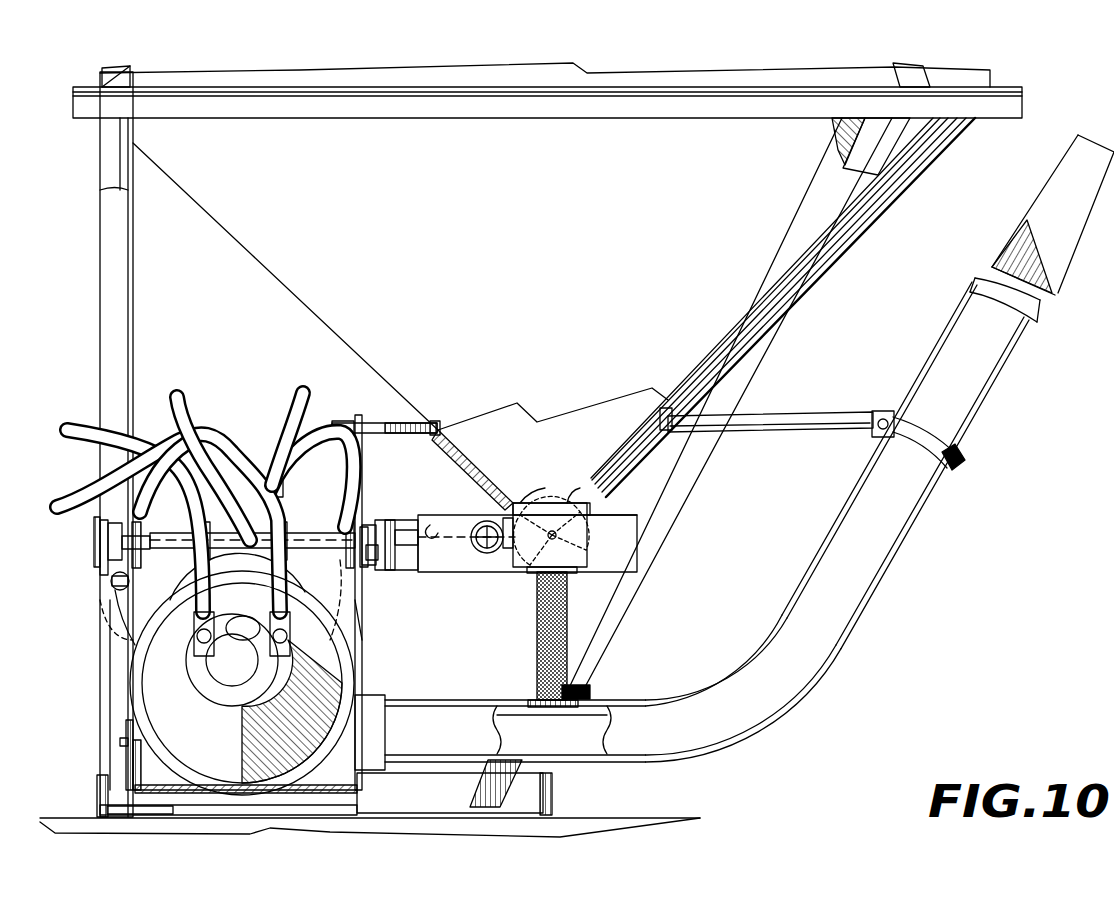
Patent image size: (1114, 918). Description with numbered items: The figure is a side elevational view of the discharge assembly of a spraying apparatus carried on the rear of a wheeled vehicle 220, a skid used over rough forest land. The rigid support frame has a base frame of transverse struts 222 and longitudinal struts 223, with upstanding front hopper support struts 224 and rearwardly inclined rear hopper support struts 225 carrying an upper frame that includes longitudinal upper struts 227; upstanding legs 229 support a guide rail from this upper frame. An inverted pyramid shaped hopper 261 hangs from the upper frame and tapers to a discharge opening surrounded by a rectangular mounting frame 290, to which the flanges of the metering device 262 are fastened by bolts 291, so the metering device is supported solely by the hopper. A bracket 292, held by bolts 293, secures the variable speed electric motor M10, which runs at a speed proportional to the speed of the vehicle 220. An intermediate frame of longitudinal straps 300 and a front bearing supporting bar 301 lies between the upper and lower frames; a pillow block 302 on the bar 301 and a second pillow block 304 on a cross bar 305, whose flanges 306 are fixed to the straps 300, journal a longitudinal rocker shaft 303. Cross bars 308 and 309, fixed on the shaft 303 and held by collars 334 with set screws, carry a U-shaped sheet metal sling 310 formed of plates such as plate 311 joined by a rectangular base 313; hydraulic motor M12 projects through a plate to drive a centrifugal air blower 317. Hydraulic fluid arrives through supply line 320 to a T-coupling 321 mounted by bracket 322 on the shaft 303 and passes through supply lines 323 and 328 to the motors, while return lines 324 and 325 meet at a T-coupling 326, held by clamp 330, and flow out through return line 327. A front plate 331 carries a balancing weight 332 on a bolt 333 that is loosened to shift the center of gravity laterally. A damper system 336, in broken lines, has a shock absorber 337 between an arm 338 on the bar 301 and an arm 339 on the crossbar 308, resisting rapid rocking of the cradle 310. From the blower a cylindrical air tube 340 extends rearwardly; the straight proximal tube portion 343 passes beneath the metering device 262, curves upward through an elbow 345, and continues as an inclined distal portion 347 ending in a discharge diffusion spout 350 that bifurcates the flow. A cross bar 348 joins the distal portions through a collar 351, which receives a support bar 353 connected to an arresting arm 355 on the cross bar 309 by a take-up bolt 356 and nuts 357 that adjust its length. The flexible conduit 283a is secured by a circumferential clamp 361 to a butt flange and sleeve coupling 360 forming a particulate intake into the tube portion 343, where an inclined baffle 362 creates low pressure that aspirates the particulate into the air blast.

The wheeled vehicle 220 is at (602, 816).
The transverse struts 222 is at (97, 803).
The longitudinal struts 223 is at (440, 801).
The front hopper support struts 224 is at (100, 160).
The rear hopper support struts 225 is at (850, 172).
The upper struts 227 is at (483, 110).
The legs 229 is at (100, 78).
The hopper 261 is at (558, 266).
The metering device 262 is at (590, 520).
The flexible conduit 283a is at (537, 650).
The rectangular mounting frame 290 is at (590, 500).
The bolts 291 is at (525, 503).
The bracket 292 is at (513, 508).
The bolts 293 is at (522, 576).
The straps 300 is at (637, 572).
The bearing supporting bar 301 is at (95, 570).
The pillow block 302 is at (108, 548).
The rocker shaft 303 is at (270, 520).
The second pillow block 304 is at (381, 566).
The cross bar 305 is at (398, 560).
The flanges 306 is at (395, 520).
The cross bar 308 is at (94, 526).
The cross bar 309 is at (381, 521).
The blower supporting sling 310 is at (400, 612).
The sheet metal plate 311 is at (345, 601).
The rectangular base 313 is at (250, 790).
The centrifugal air blower 317 is at (370, 695).
The hydraulic supply line 320 is at (100, 425).
The T-coupling 321 is at (190, 478).
The bracket 322 is at (205, 550).
The hydraulic supply line 323 is at (185, 631).
The return hydraulic line 324 is at (300, 631).
The return hydraulic line 325 is at (290, 400).
The T-coupling 326 is at (266, 488).
The return hydraulic line 327 is at (95, 495).
The hydraulic supply line 328 is at (178, 395).
The clamp 330 is at (247, 615).
The front plate 331 is at (130, 762).
The balancing weight 332 is at (128, 725).
The bolt 333 is at (120, 740).
The collars 334 is at (250, 552).
The damper system 336 is at (100, 615).
The shock absorber 337 is at (135, 642).
The arm 338 is at (108, 586).
The arm 339 is at (252, 570).
The discharge barrel 340 is at (858, 612).
The proximal tube portion 343 is at (455, 706).
The intermediate elbow 345 is at (775, 700).
The discharge distal portion 347 is at (970, 400).
The transverse cross bar 348 is at (948, 476).
The discharge diffusion spout 350 is at (1063, 270).
The collar 351 is at (873, 438).
The support bar 353 is at (818, 425).
The arresting arm 355 is at (360, 500).
The take-up bolt 356 is at (350, 415).
The nuts 357 is at (395, 420).
The butt flange and sleeve coupling 360 is at (577, 690).
The circumferential clamp 361 is at (540, 700).
The baffle 362 is at (527, 716).
The motor M10 is at (480, 548).
The hydraulic motor M12 is at (205, 668).